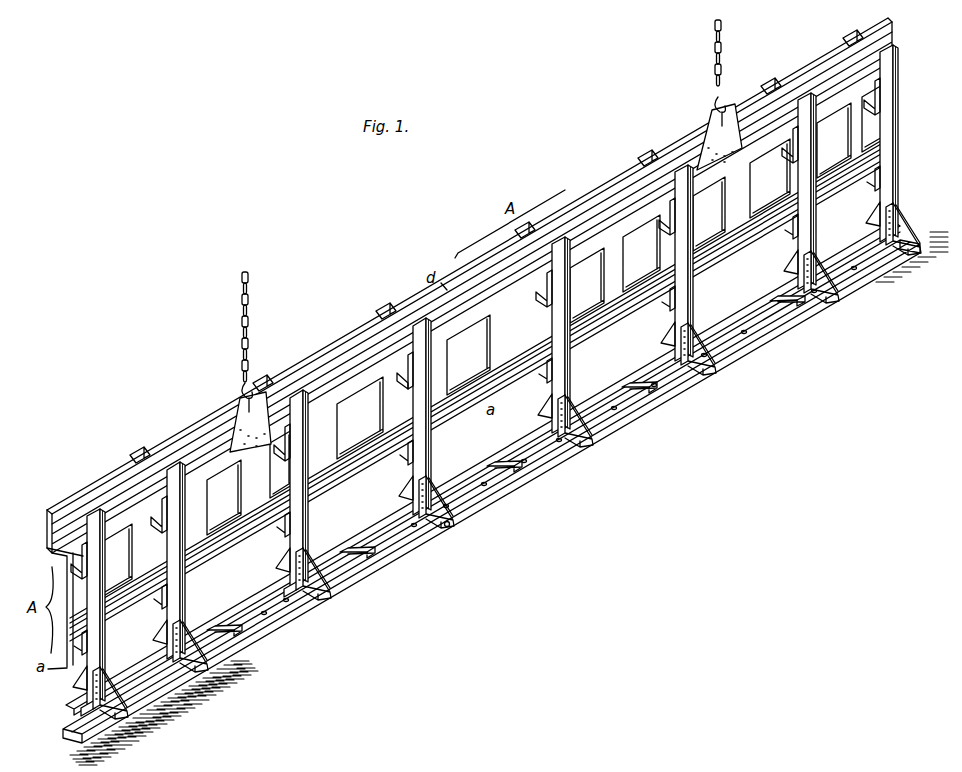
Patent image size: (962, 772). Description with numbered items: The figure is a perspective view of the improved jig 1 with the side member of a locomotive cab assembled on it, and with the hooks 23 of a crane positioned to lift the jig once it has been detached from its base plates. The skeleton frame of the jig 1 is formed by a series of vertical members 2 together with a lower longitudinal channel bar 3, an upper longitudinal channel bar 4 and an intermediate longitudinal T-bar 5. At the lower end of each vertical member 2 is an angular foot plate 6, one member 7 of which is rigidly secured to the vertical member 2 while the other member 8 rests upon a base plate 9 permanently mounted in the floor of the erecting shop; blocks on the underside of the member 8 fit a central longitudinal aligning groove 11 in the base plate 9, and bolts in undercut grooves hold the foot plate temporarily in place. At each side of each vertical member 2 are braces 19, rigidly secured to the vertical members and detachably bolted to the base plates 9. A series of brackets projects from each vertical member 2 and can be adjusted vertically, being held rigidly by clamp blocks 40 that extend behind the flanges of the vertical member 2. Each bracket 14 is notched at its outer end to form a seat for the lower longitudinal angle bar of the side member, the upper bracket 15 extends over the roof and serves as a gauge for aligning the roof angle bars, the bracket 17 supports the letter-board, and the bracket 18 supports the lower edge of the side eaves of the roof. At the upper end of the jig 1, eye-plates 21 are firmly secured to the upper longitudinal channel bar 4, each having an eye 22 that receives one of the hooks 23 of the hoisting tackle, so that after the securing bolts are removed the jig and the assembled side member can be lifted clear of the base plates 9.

The jig 1 is at (495, 391).
The vertical members 2 is at (102, 640).
The longitudinal channel bar 3 is at (251, 592).
The upper longitudinal channel bar 4 is at (130, 500).
The intermediate longitudinal T-bar 5 is at (622, 312).
The foot plate 6 is at (512, 461).
The member of the foot plate 7 is at (181, 626).
The member of the foot plate 8 is at (448, 527).
The base plate 9 is at (272, 643).
The central longitudinal aligning groove 11 is at (424, 561).
The bracket 14 is at (75, 678).
The upper bracket 15 is at (445, 298).
The bracket 17 is at (404, 378).
The bracket 18 is at (416, 357).
The braces 19 is at (84, 700).
The eye-plates 21 is at (256, 392).
The eye 22 is at (237, 408).
The hooks 23 is at (242, 380).
The clamp blocks 40 is at (283, 459).